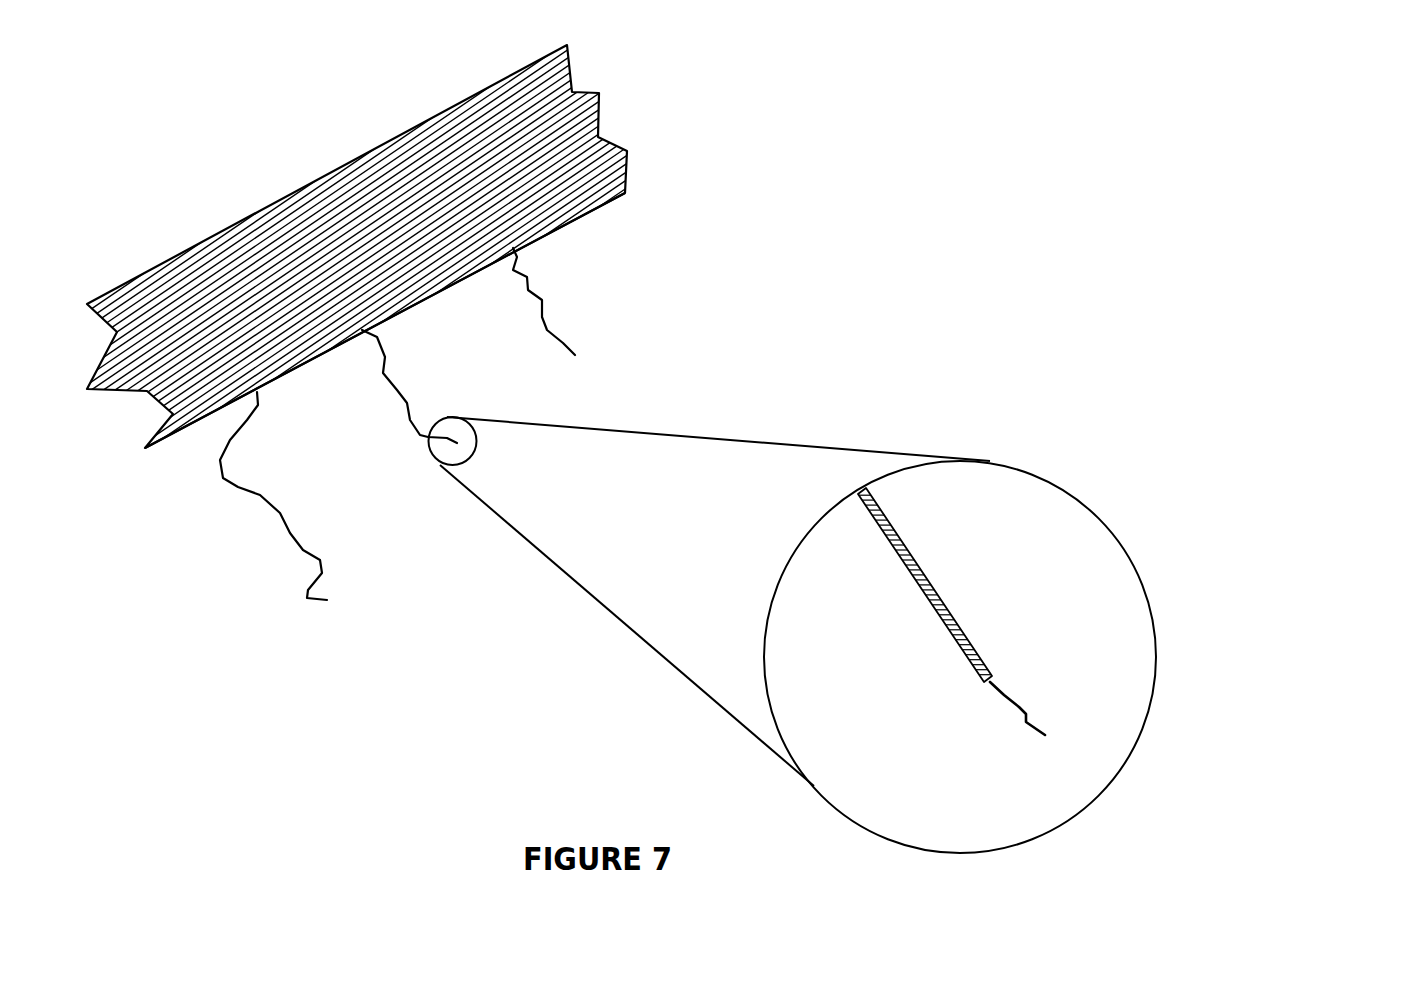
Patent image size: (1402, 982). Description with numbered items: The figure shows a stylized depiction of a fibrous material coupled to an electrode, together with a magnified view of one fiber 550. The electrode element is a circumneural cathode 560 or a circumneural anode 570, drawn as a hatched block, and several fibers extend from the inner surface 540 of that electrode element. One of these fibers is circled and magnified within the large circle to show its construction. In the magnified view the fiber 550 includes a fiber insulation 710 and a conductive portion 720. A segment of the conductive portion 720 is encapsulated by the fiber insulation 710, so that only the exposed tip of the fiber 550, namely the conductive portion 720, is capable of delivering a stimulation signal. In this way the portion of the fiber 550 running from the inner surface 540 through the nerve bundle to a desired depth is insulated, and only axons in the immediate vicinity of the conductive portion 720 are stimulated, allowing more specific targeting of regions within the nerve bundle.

The circumneural cathode 560 is at (360, 280).
The circumneural anode 570 is at (390, 102).
The inner surface 540 is at (577, 220).
The fiber 550 is at (246, 593).
The fiber insulation 710 is at (1025, 503).
The conductive portion 720 is at (1187, 613).